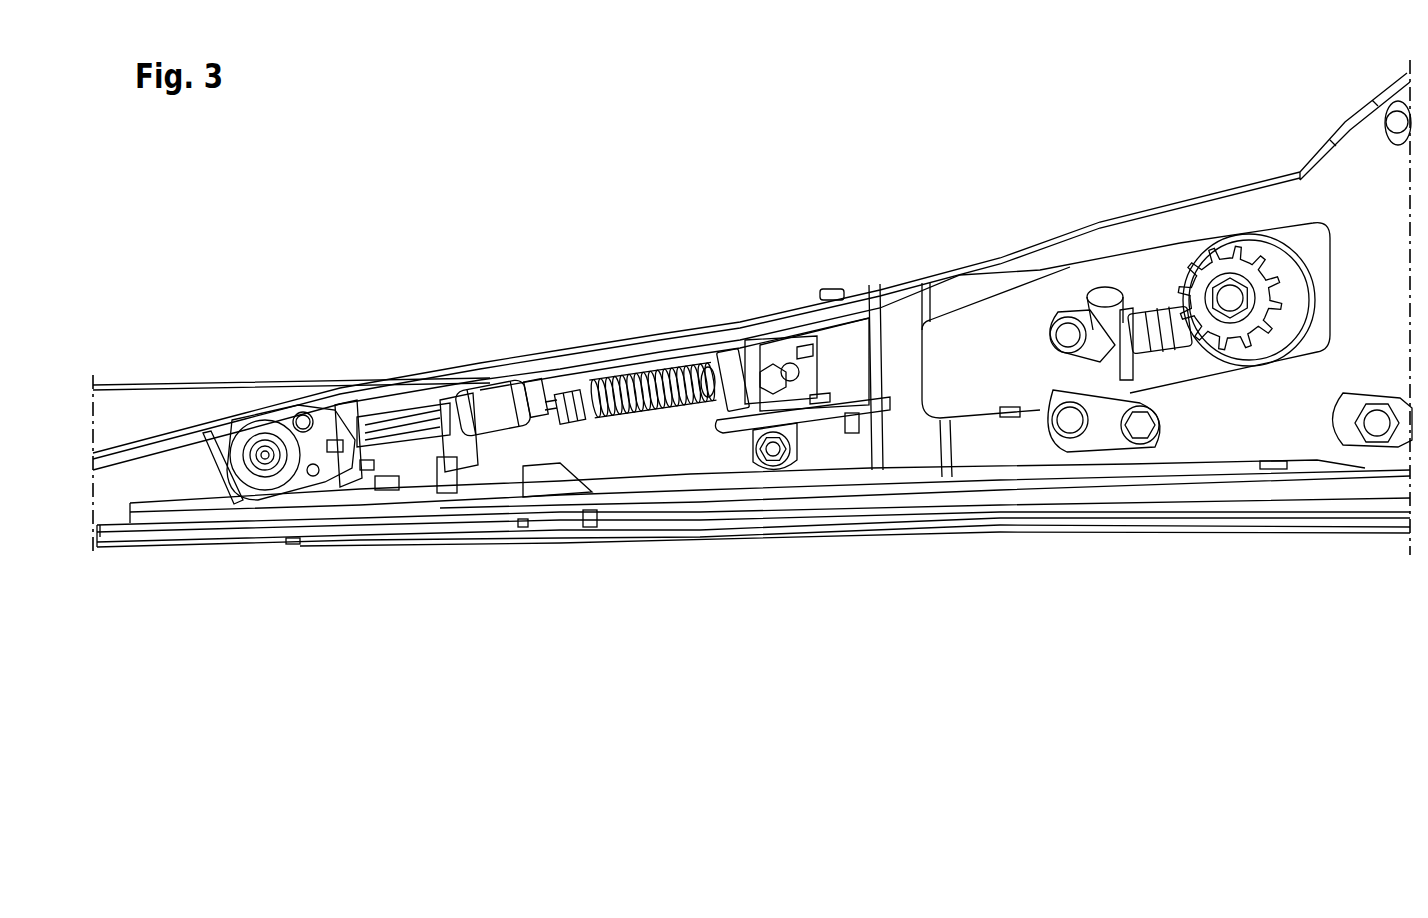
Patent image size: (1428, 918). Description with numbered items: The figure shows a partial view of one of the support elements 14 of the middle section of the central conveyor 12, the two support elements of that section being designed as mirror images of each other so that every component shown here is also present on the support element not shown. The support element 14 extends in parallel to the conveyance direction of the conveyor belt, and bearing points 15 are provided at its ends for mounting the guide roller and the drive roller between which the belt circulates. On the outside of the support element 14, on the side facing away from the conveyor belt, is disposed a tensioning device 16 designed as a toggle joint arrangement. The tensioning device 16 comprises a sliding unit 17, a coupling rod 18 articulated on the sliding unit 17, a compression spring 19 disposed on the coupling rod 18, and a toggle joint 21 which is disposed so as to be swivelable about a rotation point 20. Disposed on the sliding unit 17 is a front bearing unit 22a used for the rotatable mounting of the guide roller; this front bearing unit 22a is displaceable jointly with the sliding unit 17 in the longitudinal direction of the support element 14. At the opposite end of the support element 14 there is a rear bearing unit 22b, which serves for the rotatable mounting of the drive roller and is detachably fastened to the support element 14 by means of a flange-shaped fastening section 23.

The central conveyor 12 is at (732, 287).
The support element 14 is at (748, 457).
The bearing point 15 is at (237, 500).
The tensioning device 16 is at (483, 363).
The sliding unit 17 is at (350, 413).
The coupling rod 18 is at (540, 408).
The compression spring 19 is at (633, 374).
The rotation point 20 is at (830, 290).
The toggle joint 21 is at (517, 403).
The front bearing unit 22a is at (267, 427).
The rear bearing unit 22b is at (1250, 242).
The flange-shaped fastening section 23 is at (1177, 273).